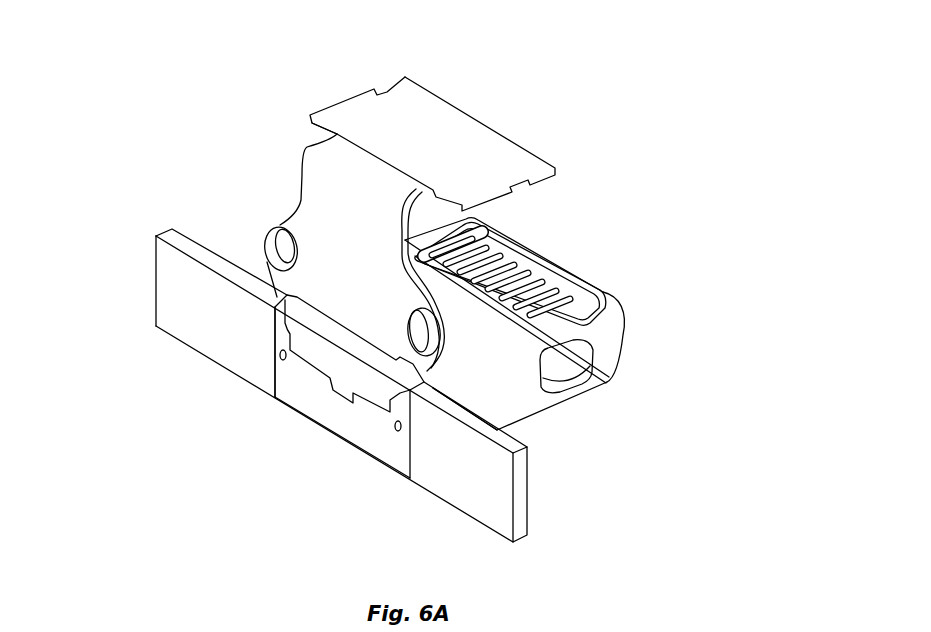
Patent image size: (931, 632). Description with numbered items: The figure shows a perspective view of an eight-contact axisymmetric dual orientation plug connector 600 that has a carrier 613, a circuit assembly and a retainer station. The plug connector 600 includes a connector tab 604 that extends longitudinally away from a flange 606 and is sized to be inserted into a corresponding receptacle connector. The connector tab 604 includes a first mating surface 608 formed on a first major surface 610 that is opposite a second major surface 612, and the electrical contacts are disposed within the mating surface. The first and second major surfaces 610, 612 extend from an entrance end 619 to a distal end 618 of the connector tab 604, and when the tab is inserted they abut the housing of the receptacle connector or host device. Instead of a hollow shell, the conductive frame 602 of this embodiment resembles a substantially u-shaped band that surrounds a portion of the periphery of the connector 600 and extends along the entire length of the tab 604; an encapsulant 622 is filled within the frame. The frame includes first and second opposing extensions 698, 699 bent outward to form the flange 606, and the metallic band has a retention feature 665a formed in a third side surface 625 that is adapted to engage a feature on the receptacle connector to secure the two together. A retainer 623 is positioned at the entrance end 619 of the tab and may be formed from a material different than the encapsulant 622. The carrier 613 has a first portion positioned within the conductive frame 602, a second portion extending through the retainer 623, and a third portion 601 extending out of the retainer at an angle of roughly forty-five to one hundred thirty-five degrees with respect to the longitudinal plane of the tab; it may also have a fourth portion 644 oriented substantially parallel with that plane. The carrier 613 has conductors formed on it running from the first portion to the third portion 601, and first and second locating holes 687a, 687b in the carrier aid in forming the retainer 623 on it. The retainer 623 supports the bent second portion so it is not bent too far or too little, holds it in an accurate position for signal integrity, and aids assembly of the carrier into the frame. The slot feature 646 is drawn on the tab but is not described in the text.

The plug connector 600 is at (168, 46).
The third portion 601 is at (268, 198).
The conductive frame 602 is at (610, 333).
The connector tab 604 is at (650, 482).
The flange 606 is at (138, 279).
The first mating surface 608 is at (567, 287).
The first major surface 610 is at (505, 262).
The second major surface 612 is at (552, 438).
The carrier 613 is at (440, 137).
The distal end 618 is at (572, 243).
The entrance end 619 is at (306, 462).
The encapsulant 622 is at (313, 400).
The retainer 623 is at (340, 367).
The third side surface 625 is at (520, 392).
The fourth portion 644 is at (347, 95).
The first slot surround 646 is at (458, 250).
The retention feature 665a is at (563, 370).
The first locating hole 687a is at (284, 250).
The second locating hole 687b is at (422, 336).
The first extension 698 is at (168, 255).
The second extension 699 is at (500, 503).